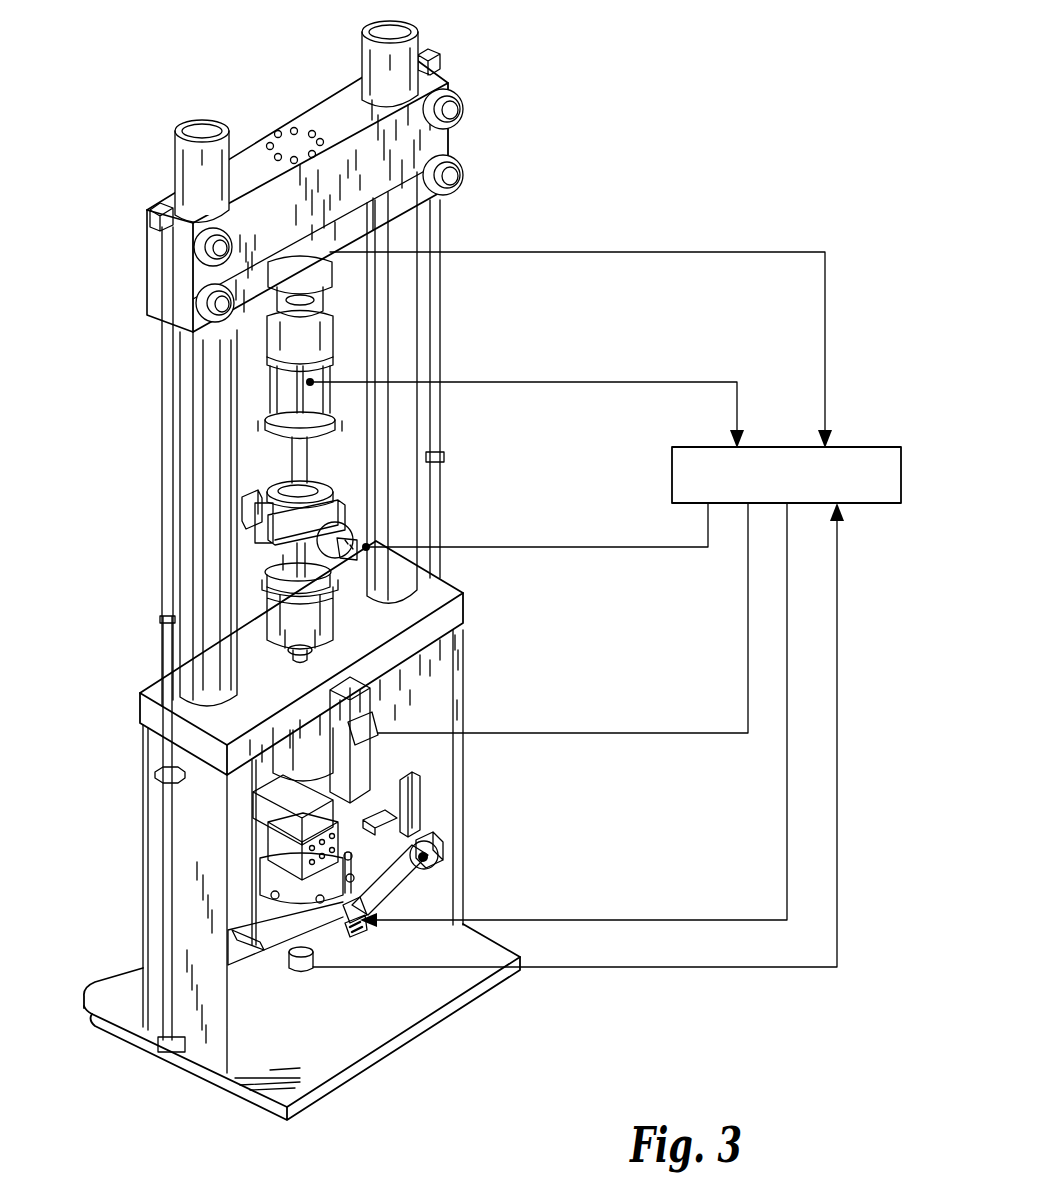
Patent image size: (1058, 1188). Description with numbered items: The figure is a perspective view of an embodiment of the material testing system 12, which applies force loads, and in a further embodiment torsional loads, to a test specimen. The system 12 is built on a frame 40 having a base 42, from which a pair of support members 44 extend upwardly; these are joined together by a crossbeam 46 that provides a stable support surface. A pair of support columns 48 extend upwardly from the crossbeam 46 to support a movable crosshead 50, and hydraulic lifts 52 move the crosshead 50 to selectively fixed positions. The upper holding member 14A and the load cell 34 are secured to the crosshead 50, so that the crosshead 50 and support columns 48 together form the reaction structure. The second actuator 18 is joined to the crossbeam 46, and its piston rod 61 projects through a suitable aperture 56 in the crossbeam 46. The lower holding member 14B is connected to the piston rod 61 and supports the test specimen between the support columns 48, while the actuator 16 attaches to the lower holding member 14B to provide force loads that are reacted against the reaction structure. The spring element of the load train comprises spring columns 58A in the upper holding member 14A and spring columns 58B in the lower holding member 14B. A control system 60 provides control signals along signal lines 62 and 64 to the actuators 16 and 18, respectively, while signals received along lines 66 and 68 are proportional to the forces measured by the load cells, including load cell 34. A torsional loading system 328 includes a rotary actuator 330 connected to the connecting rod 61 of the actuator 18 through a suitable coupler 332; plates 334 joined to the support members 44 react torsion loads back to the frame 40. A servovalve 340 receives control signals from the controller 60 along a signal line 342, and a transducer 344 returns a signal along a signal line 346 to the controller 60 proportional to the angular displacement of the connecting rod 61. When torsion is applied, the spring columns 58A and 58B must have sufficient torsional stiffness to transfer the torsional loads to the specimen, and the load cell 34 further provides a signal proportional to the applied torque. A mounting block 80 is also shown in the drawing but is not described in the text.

The material testing system 12 is at (532, 461).
The upper holding member 14A is at (263, 360).
The lower holding member 14B is at (266, 557).
The actuator 16 is at (254, 506).
The second actuator 18 is at (293, 761).
The load cell 34 is at (293, 262).
The frame 40 is at (486, 224).
The base 42 is at (384, 1064).
The support members 44 is at (462, 817).
The crossbeam 46 is at (465, 607).
The support columns 48 is at (195, 413).
The movable crosshead 50 is at (450, 136).
The hydraulic lifts 52 is at (445, 523).
The aperture 56 is at (295, 648).
The spring columns 58A is at (267, 398).
The spring columns 58B is at (271, 578).
The control system 60 is at (865, 448).
The piston rod 61 is at (300, 668).
The signal line 62 is at (604, 548).
The signal line 64 is at (572, 733).
The signal line 66 is at (683, 381).
The signal line 68 is at (688, 252).
The mounting block 80 is at (285, 820).
The torsional loading system 328 is at (425, 890).
The rotary actuator 330 is at (318, 925).
The coupler 332 is at (287, 857).
The plates 334 is at (423, 823).
The servovalve 340 is at (355, 925).
The signal line 342 is at (637, 920).
The transducer 344 is at (228, 965).
The signal line 346 is at (648, 967).